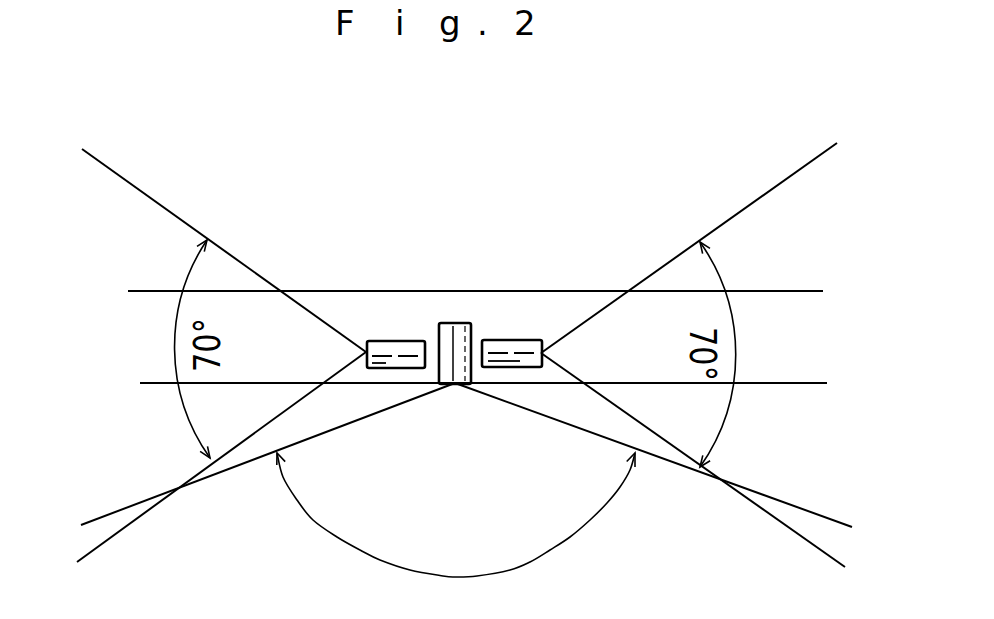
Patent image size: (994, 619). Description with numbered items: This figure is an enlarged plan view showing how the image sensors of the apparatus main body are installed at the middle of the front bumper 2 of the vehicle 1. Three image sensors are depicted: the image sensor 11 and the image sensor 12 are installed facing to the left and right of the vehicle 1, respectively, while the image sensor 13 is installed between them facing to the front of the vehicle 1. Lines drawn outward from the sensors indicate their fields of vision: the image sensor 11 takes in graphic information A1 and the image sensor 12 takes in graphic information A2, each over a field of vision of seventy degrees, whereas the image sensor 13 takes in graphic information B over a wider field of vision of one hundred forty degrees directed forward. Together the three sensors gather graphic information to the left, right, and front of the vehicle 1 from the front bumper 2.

The vehicle 1 is at (469, 260).
The image sensor 11 is at (392, 341).
The image sensor 12 is at (512, 340).
The image sensor 13 is at (440, 373).
The front bumper 2 is at (758, 383).
The graphic information A1 is at (100, 383).
The graphic information A2 is at (858, 375).
The graphic information B is at (472, 512).